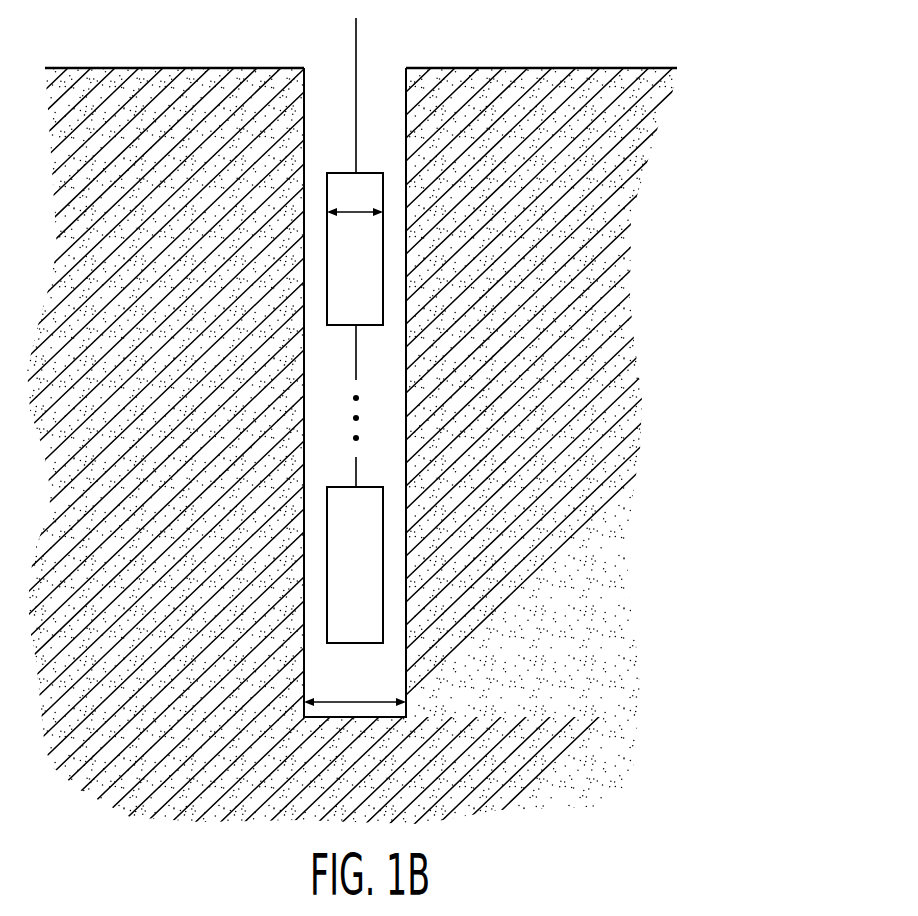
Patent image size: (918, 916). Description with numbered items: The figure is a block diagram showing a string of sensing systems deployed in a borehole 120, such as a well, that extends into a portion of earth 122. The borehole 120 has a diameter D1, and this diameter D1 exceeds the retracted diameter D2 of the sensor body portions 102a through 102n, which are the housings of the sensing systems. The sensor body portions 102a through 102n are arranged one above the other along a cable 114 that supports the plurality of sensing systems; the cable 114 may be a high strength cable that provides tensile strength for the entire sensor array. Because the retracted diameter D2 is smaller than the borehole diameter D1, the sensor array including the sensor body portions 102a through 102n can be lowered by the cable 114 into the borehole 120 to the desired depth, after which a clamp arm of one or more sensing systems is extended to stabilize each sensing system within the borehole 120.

The cable 114 is at (355, 70).
The earth 122 is at (553, 69).
The sensor body portion 102a is at (424, 249).
The sensor body portion 102n is at (383, 568).
The borehole 120 is at (395, 665).
The diameter of the borehole D1 is at (355, 689).
The retracted diameter of the sensor body portions D2 is at (355, 198).